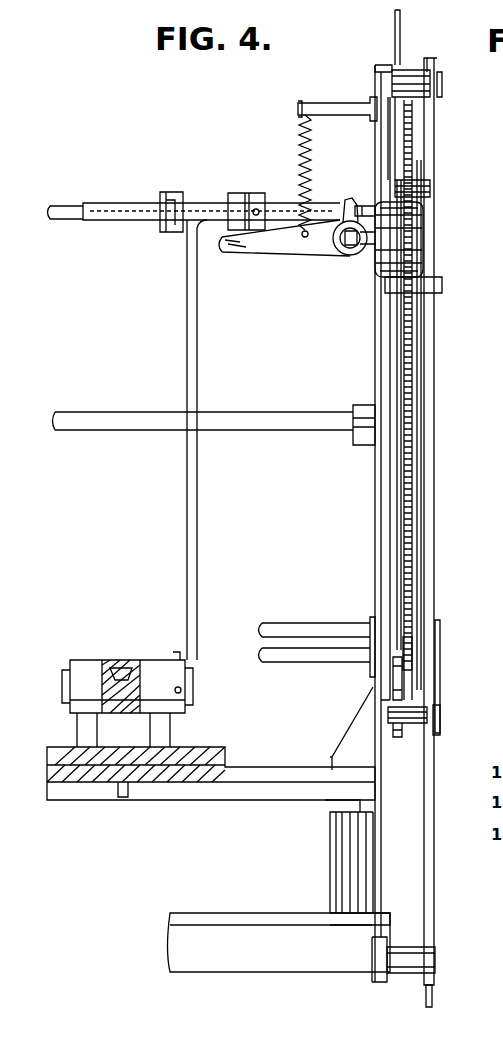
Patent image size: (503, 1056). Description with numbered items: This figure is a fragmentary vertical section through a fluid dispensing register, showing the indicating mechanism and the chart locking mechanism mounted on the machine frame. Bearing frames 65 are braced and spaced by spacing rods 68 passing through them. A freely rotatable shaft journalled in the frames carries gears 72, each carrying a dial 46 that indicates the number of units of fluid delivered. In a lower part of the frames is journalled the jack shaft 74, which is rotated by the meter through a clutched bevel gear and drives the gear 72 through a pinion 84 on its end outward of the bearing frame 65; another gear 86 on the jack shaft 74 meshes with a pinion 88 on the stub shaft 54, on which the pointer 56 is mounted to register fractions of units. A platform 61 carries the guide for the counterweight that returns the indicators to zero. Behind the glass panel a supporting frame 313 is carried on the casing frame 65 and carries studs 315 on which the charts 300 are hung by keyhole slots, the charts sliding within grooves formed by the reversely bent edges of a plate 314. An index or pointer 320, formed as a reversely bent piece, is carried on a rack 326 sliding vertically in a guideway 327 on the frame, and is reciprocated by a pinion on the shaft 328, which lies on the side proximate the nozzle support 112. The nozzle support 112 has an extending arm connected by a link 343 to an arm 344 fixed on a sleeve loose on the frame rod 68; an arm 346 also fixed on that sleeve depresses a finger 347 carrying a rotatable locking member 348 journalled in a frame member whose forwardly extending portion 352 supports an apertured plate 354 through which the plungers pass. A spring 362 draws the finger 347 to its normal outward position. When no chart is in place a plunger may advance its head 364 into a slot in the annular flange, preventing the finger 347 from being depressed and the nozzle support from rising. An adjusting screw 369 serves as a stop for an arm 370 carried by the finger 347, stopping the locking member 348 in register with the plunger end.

The dial 46 is at (421, 458).
The stub shaft 54 is at (436, 735).
The pointer 56 is at (441, 637).
The platform 61 is at (253, 768).
The bearing frames 65 is at (378, 489).
The spacing rods 68 is at (63, 221).
The gears 72 is at (409, 500).
The jack shaft 74 is at (288, 662).
The pinion 84 is at (411, 680).
The gear 86 is at (400, 690).
The pinion 88 is at (397, 738).
The nozzle support 112 is at (123, 665).
The charts 300 is at (431, 1002).
The supporting frame 313 is at (376, 81).
The plate 314 is at (430, 825).
The studs 315 is at (410, 78).
The index or pointer 320 is at (440, 275).
The rack 326 is at (395, 14).
The guideway 327 is at (389, 353).
The shaft 328 is at (122, 413).
The link 343 is at (198, 549).
The arm 344 is at (181, 194).
The arm 346 is at (243, 226).
The finger 347 is at (268, 243).
The locking member 348 is at (345, 257).
The forwardly extending portion 352 is at (405, 218).
The apertured plate 354 is at (425, 234).
The spring 362 is at (298, 126).
The head 364 is at (352, 250).
The adjusting screw 369 is at (361, 203).
The arm 370 is at (345, 213).